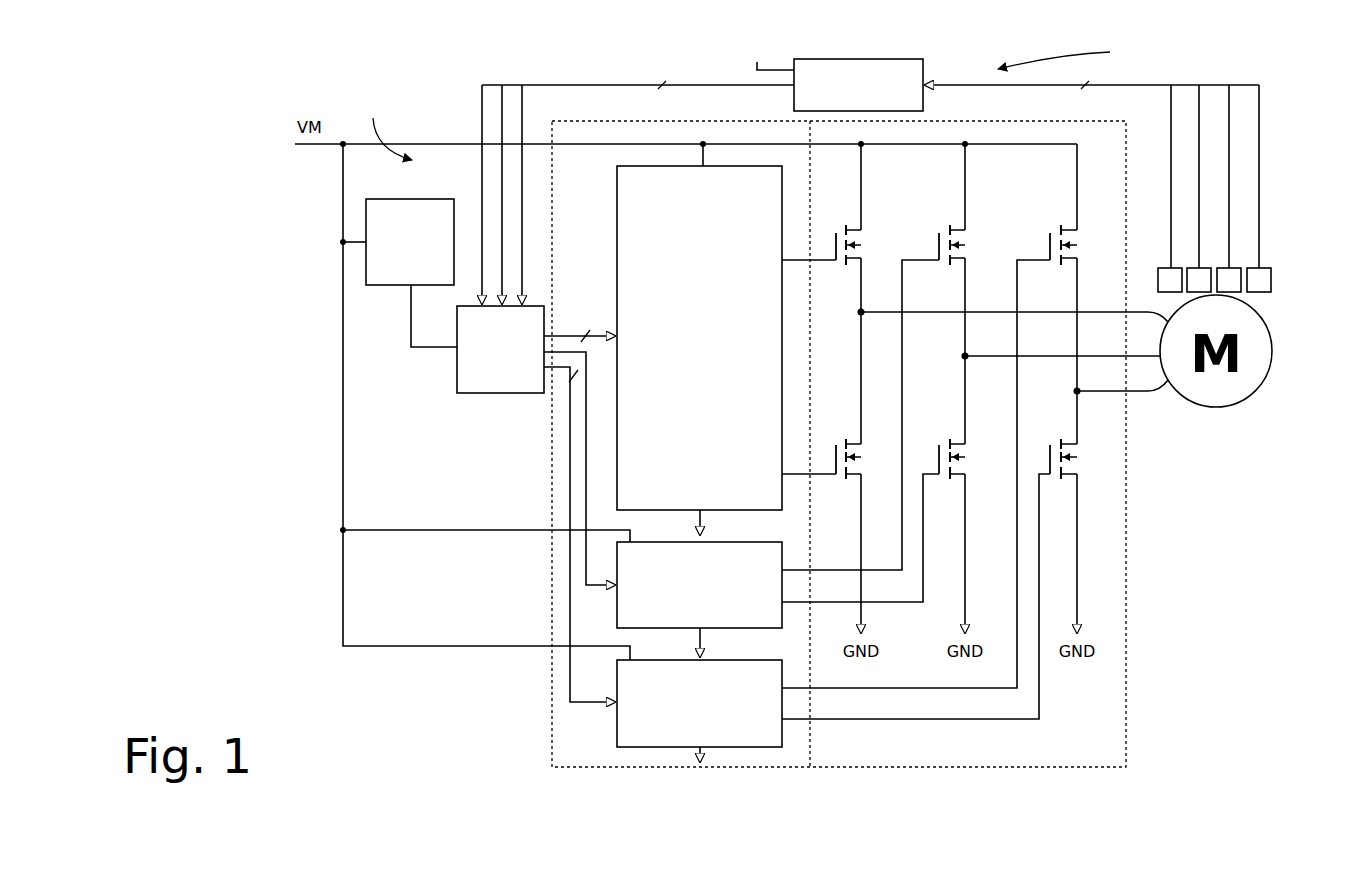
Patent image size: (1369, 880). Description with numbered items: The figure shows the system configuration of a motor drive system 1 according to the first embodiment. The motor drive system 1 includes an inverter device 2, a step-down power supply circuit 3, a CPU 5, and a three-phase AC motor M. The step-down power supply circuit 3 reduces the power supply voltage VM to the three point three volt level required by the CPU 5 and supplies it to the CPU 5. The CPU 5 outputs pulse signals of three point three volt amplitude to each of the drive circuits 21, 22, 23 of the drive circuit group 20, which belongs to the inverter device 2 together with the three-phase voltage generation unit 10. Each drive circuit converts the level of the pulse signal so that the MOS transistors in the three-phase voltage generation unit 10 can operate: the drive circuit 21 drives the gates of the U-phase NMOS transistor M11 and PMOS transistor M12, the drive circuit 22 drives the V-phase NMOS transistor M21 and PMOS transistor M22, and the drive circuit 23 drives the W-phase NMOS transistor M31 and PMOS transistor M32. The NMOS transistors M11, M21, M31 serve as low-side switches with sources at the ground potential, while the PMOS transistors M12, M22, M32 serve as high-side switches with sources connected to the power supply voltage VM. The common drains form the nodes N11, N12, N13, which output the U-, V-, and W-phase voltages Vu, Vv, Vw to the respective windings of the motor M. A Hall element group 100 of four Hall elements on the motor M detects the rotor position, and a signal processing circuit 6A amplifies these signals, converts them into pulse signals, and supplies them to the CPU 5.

The motor drive system 1 is at (1258, 612).
The inverter device 2 is at (1142, 718).
The step-down power supply circuit 3 is at (412, 199).
The central processing unit (CPU) 5 is at (501, 395).
The signal processing circuit 6A is at (925, 66).
The three-phase voltage generation unit 10 is at (1127, 606).
The drive circuit group 20 is at (552, 602).
The drive circuit 21 is at (617, 189).
The drive circuit 22 is at (618, 595).
The drive circuit 23 is at (618, 671).
The Hall element group 100 is at (1284, 280).
The NMOS transistor M11 is at (846, 440).
The PMOS transistor M12 is at (846, 226).
The NMOS transistor M21 is at (950, 440).
The PMOS transistor M22 is at (950, 226).
The NMOS transistor M31 is at (1061, 440).
The PMOS transistor M32 is at (1061, 226).
The node N11 is at (858, 312).
The node N12 is at (963, 358).
The node N13 is at (1072, 391).